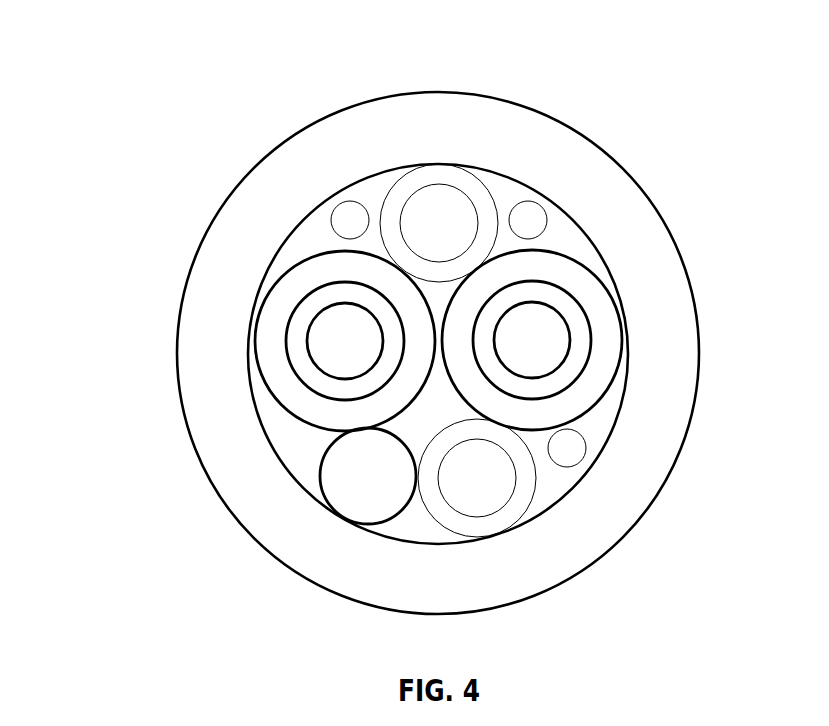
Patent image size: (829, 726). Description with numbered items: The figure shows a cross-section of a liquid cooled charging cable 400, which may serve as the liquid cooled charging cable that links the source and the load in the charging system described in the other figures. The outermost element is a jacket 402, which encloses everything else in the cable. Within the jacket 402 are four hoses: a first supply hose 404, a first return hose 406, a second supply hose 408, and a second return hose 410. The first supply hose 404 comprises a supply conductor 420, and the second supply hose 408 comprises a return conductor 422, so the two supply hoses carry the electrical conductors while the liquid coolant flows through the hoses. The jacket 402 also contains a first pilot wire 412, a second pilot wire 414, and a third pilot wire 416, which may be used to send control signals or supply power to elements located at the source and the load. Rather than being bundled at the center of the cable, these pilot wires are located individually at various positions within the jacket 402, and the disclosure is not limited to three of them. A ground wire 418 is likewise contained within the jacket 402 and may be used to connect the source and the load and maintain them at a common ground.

The liquid cooled charging cable 400 is at (93, 39).
The jacket 402 is at (177, 353).
The first supply hose 404 is at (270, 357).
The first return hose 406 is at (440, 178).
The second supply hose 408 is at (600, 327).
The second return hose 410 is at (500, 522).
The first pilot wire 412 is at (348, 225).
The second pilot wire 414 is at (530, 225).
The third pilot wire 416 is at (567, 458).
The ground wire 418 is at (342, 495).
The supply conductor 420 is at (322, 353).
The return conductor 422 is at (555, 353).